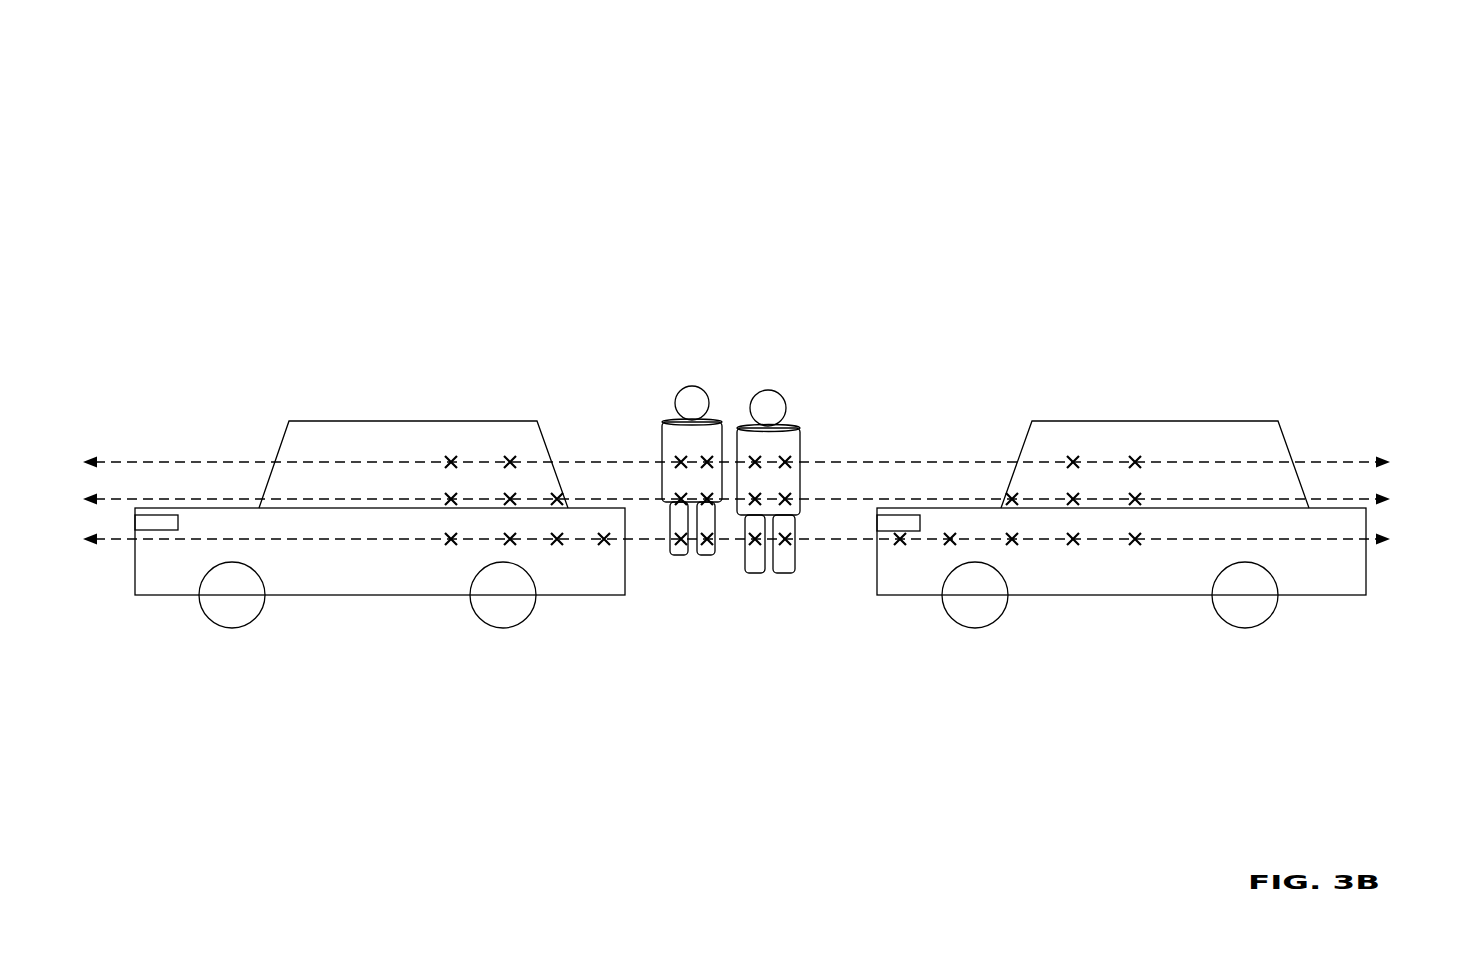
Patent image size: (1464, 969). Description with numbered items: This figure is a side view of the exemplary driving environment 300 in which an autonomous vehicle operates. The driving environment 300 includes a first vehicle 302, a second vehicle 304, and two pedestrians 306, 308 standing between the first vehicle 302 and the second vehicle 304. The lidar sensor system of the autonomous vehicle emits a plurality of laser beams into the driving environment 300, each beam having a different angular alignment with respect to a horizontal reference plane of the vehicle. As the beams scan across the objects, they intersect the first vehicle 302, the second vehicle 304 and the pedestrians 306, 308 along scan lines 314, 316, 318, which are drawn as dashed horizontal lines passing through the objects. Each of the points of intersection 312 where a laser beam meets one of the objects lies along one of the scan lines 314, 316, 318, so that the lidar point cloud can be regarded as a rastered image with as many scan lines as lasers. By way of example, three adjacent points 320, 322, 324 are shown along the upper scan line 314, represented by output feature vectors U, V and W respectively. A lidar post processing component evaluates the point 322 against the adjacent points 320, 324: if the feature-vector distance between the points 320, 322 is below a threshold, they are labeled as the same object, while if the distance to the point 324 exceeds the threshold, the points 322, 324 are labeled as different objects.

The driving environment 300 is at (169, 73).
The first vehicle 302 is at (429, 421).
The second vehicle 304 is at (1172, 421).
The pedestrian 306 is at (690, 386).
The pedestrian 308 is at (782, 392).
The points of intersection 312 is at (1073, 462).
The upper scan line 314 is at (1388, 465).
The scan line 316 is at (1388, 502).
The scan line 318 is at (1388, 541).
The point 320 is at (681, 462).
The point 322 is at (707, 462).
The point 324 is at (755, 462).